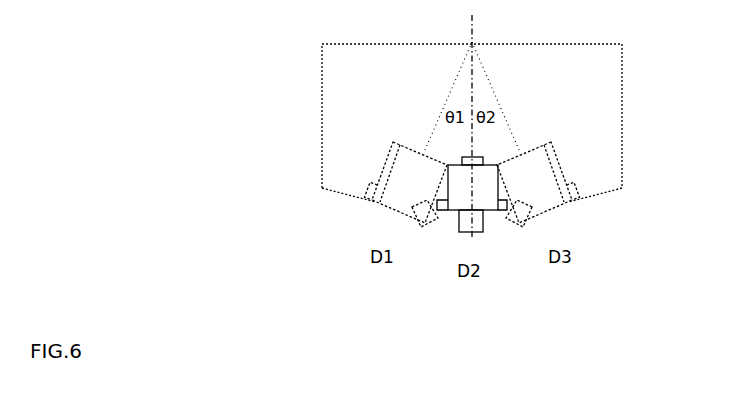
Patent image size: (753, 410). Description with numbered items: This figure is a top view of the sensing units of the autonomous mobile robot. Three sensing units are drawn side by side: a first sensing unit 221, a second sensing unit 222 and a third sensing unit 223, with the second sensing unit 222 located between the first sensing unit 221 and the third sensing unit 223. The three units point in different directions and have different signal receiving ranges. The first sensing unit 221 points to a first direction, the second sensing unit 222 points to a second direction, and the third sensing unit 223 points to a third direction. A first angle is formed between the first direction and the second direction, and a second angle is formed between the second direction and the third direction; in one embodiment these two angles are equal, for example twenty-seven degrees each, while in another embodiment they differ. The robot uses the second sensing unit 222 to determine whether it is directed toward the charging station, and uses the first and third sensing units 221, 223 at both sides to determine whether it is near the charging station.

The first sensing unit 221 is at (389, 157).
The second sensing unit 222 is at (488, 217).
The third sensing unit 223 is at (555, 157).